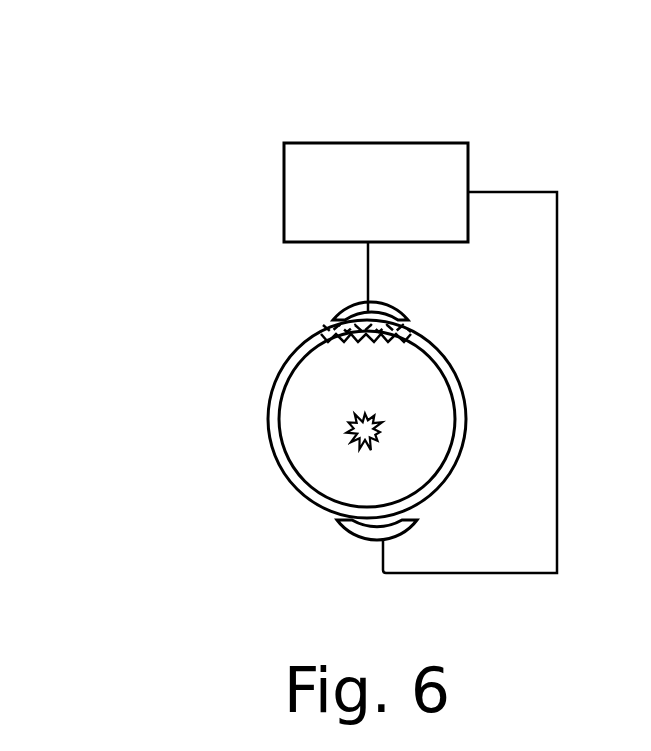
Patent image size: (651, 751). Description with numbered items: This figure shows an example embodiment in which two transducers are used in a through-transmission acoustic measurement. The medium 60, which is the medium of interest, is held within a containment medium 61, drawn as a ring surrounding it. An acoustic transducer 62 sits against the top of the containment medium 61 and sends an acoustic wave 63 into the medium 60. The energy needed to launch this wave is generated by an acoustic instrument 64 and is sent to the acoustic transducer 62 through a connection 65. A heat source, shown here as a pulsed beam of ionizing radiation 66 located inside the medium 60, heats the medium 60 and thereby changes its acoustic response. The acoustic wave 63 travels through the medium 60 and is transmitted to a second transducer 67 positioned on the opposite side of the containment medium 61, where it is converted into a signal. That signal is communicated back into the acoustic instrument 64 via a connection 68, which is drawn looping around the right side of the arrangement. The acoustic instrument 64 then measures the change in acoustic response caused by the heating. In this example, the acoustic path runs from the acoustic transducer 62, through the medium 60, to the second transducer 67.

The medium 60 is at (317, 392).
The containment medium 61 is at (283, 377).
The acoustic transducer 62 is at (338, 312).
The acoustic wave 63 is at (405, 338).
The acoustic instrument 64 is at (283, 178).
The connection 65 is at (365, 278).
The pulsed beam of ionizing radiation 66 is at (348, 437).
The second transducer 67 is at (355, 540).
The connection 68 is at (535, 192).